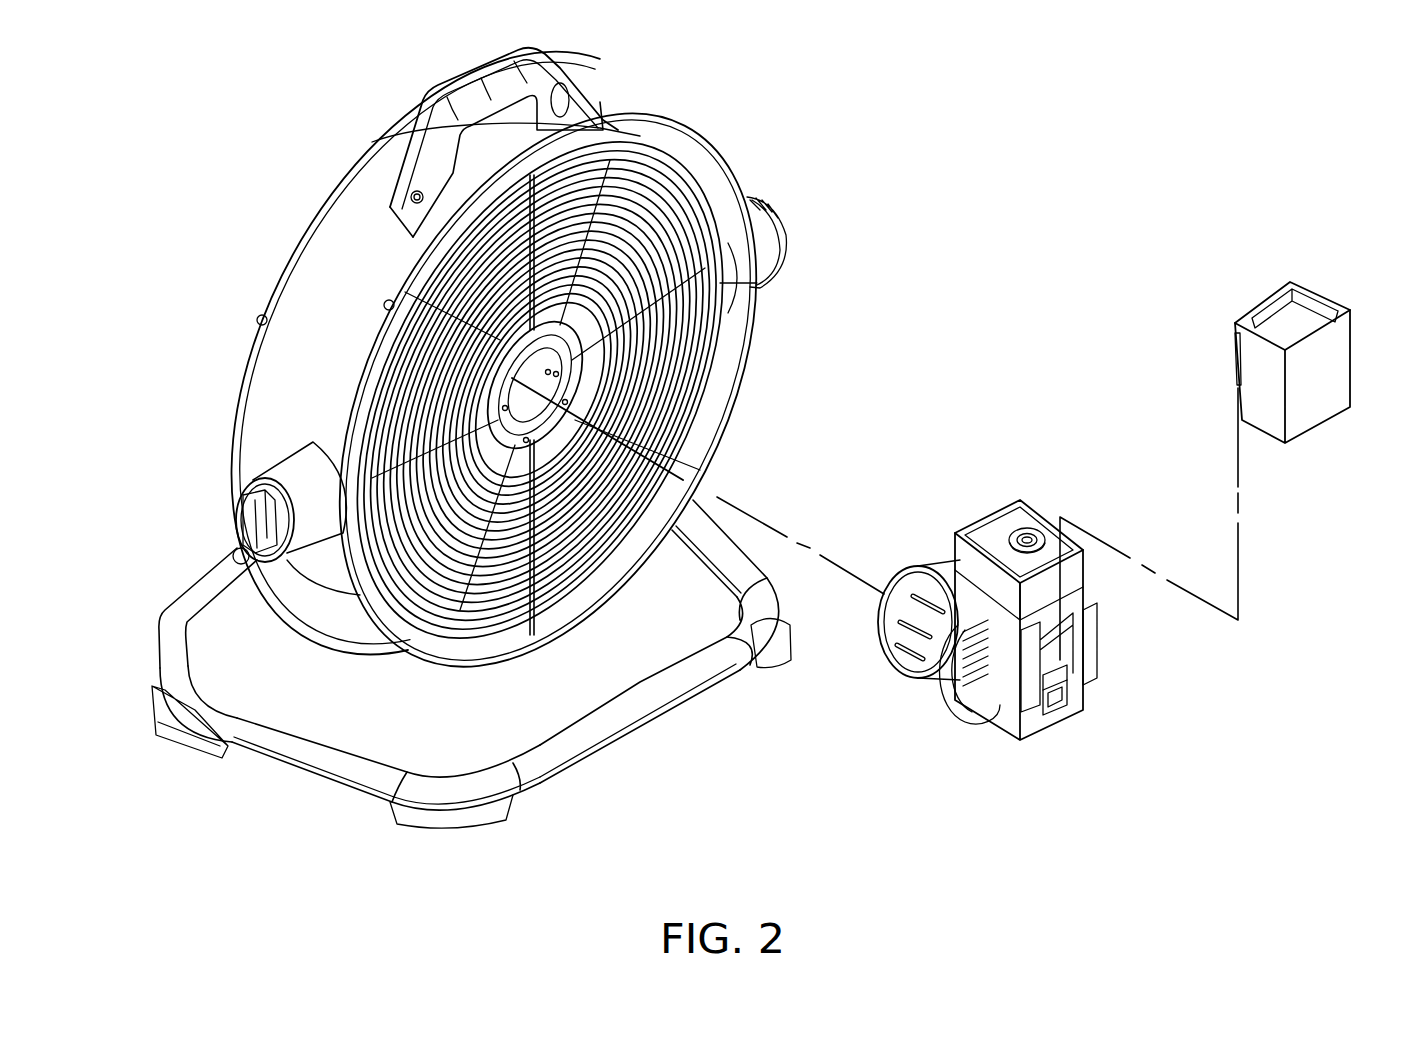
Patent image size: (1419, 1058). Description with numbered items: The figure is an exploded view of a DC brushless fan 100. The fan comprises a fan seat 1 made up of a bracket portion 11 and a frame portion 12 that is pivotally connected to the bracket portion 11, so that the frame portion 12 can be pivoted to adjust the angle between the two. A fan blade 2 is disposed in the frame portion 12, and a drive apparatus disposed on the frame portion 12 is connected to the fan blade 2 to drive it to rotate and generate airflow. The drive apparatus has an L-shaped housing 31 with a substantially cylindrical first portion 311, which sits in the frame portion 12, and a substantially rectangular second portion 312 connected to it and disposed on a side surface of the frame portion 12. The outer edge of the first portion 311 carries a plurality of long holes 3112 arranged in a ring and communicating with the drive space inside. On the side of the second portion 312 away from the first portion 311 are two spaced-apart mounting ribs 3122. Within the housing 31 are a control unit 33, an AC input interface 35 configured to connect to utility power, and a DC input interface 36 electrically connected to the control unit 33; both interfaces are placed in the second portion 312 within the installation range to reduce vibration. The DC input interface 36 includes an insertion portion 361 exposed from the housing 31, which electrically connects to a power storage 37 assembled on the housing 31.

The DC brushless fan 100 is at (198, 195).
The fan seat 1 is at (143, 432).
The bracket portion 11 is at (200, 590).
The frame portion 12 is at (247, 425).
The fan blade 2 is at (637, 176).
The housing 31 is at (1000, 478).
The first portion 311 is at (927, 583).
The long holes 3112 is at (917, 640).
The second portion 312 is at (1007, 533).
The mounting ribs 3122 is at (1093, 650).
The control unit 33 is at (1030, 530).
The AC input interface 35 is at (1060, 710).
The DC input interface 36 is at (1153, 677).
The insertion portion 361 is at (1083, 677).
The power storage 37 is at (1337, 308).